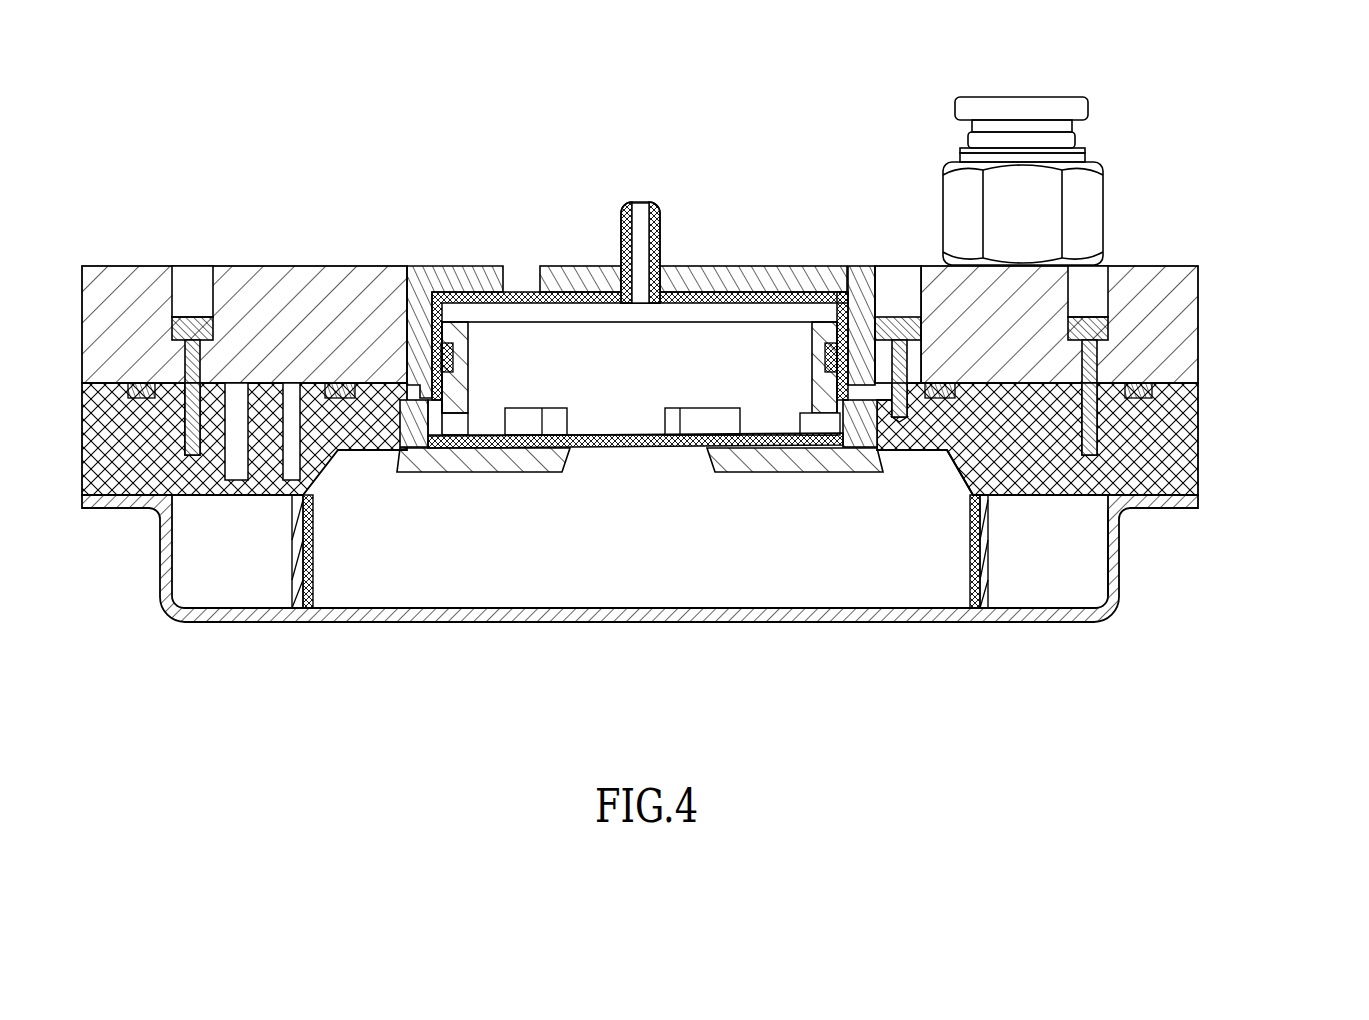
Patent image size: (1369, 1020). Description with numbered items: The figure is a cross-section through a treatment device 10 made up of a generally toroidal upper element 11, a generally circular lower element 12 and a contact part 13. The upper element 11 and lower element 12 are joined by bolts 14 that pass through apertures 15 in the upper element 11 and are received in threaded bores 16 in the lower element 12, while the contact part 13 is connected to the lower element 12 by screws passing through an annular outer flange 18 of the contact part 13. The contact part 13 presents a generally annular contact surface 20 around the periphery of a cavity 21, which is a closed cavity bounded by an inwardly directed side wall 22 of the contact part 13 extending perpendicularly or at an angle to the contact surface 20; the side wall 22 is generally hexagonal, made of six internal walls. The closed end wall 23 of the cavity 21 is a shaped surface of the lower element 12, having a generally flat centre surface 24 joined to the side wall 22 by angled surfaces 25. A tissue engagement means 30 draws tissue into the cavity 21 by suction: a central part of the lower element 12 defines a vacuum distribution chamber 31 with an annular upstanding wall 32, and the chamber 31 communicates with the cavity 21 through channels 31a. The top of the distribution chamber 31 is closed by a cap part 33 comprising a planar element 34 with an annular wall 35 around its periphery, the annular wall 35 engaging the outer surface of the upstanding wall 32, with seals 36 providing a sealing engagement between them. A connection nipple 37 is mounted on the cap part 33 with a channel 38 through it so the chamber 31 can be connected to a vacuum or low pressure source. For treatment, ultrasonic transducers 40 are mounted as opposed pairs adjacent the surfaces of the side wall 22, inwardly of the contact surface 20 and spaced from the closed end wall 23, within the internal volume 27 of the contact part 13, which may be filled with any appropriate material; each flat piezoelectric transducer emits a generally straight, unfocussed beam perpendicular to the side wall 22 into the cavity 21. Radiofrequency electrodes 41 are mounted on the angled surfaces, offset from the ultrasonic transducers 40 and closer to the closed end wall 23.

The treatment device 10 is at (1242, 582).
The upper element 11 is at (1193, 290).
The lower element 12 is at (1198, 420).
The contact part 13 is at (1120, 605).
The bolts 14 is at (190, 325).
The apertures 15 is at (180, 283).
The threaded bores 16 is at (1092, 345).
The annular outer flange 18 is at (1198, 497).
The contact surface 20 is at (1053, 622).
The cavity 21 is at (630, 567).
The side wall 22 is at (522, 573).
The closed end wall 23 is at (398, 447).
The flat centre surface 24 is at (908, 452).
The angled surfaces 25 is at (953, 450).
The internal volume 27 is at (1090, 590).
The tissue engagement means 30 is at (528, 340).
The vacuum distribution chamber 31 is at (615, 362).
The channels 31a is at (450, 343).
The upstanding wall 32 is at (462, 332).
The cap part 33 is at (700, 286).
The planar element 34 is at (740, 290).
The annular wall 35 is at (870, 290).
The seals 36 is at (845, 296).
The connection nipple 37 is at (627, 217).
The channel 38 is at (640, 212).
The ultrasonic transducers 40 is at (293, 553).
The radiofrequency electrodes 41 is at (337, 450).